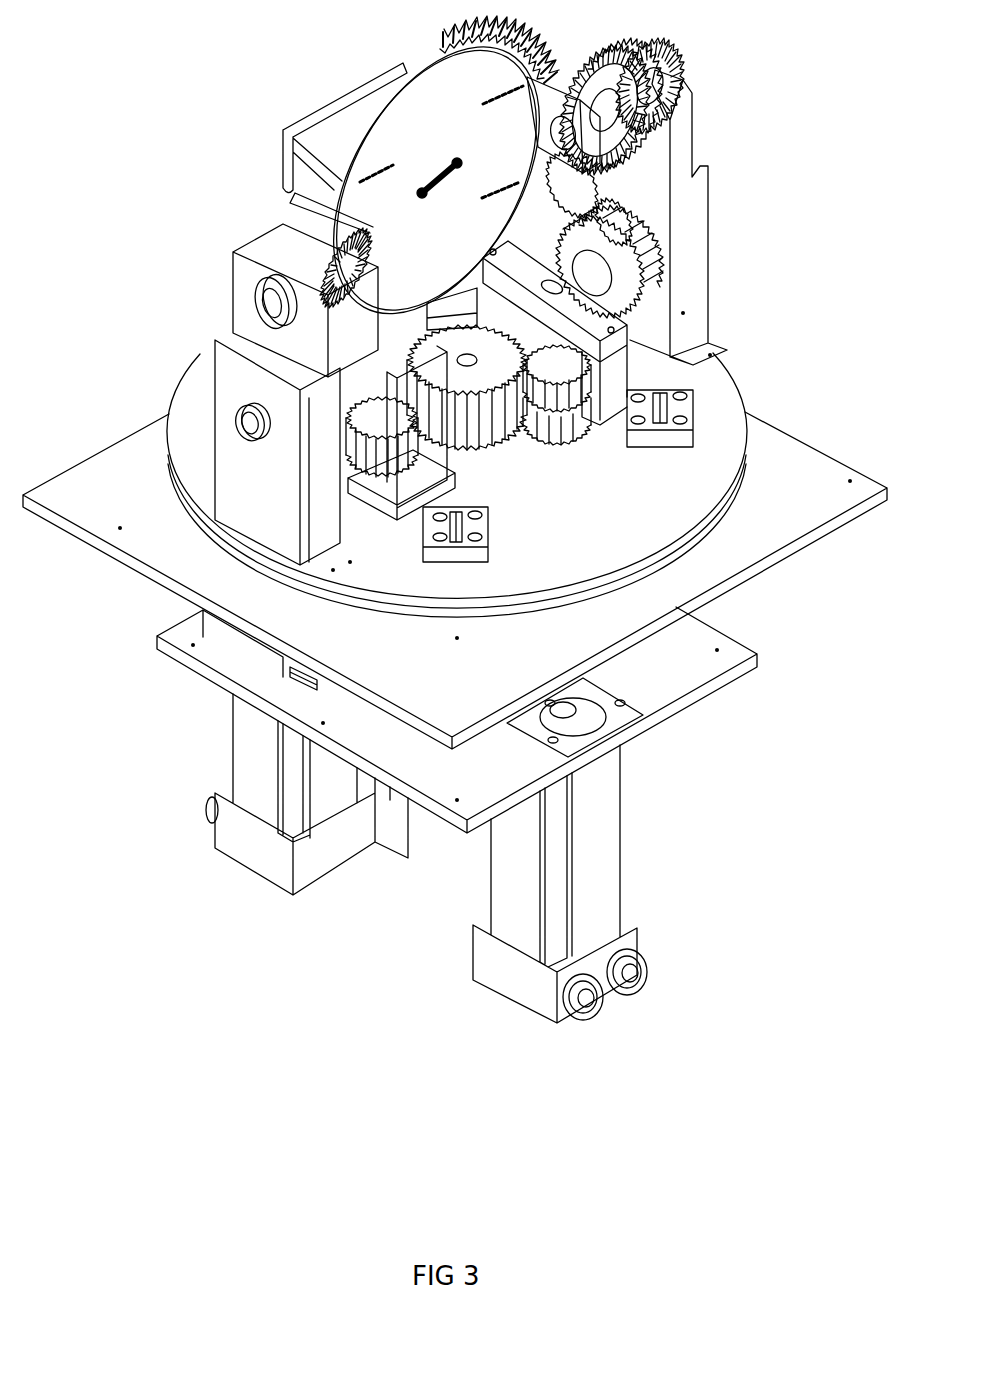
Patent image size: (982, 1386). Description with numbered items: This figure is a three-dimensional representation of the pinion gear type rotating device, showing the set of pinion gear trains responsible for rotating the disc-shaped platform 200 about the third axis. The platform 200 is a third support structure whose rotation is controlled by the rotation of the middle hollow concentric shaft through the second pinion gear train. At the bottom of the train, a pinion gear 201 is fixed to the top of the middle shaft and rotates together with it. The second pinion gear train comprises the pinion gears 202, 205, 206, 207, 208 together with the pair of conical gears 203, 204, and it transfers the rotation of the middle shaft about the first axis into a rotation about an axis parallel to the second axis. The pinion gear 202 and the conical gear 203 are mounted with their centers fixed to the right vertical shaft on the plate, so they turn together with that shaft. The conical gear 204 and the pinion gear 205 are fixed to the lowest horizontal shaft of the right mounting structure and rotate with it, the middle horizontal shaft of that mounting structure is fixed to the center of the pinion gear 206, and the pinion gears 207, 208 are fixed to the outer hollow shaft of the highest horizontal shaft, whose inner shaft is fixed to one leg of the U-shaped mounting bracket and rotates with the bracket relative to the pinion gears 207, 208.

The platform 200 is at (465, 87).
The pinion gear 201 is at (483, 452).
The pinion gear 202 is at (549, 403).
The conical gear 203 is at (570, 345).
The conical gear 204 is at (617, 283).
The pinion gear 205 is at (600, 277).
The pinion gear 206 is at (625, 182).
The pinion gear 207 is at (676, 138).
The pinion gear 208 is at (663, 110).